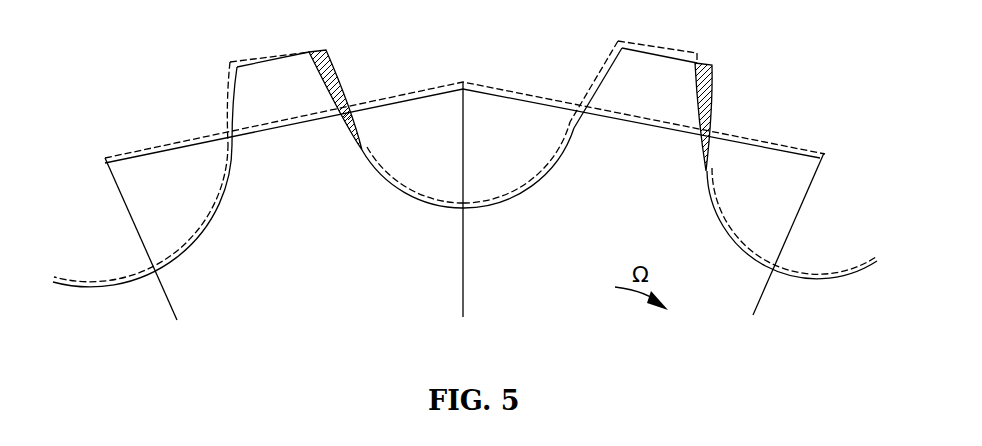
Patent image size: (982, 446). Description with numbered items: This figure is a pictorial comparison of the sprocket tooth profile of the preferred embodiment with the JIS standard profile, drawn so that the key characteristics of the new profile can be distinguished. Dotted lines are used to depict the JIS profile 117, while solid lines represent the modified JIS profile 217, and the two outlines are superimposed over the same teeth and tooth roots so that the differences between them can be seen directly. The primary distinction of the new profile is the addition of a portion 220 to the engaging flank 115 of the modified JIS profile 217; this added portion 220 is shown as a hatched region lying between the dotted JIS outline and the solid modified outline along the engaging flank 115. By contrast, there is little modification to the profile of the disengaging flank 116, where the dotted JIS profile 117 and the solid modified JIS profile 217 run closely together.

The engaging flank 115 is at (403, 192).
The disengaging flank 116 is at (527, 190).
The JIS profile 117 is at (230, 121).
The modified JIS profile 217 is at (218, 210).
The portion 220 is at (333, 64).